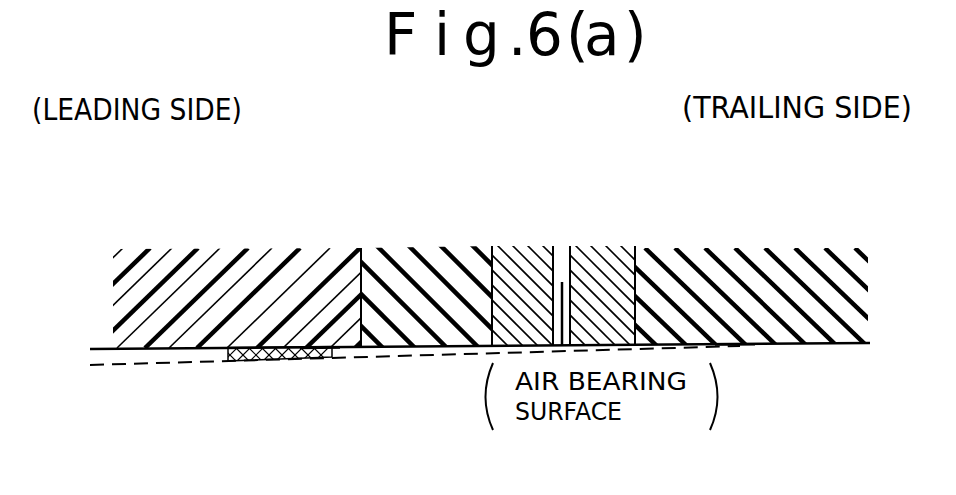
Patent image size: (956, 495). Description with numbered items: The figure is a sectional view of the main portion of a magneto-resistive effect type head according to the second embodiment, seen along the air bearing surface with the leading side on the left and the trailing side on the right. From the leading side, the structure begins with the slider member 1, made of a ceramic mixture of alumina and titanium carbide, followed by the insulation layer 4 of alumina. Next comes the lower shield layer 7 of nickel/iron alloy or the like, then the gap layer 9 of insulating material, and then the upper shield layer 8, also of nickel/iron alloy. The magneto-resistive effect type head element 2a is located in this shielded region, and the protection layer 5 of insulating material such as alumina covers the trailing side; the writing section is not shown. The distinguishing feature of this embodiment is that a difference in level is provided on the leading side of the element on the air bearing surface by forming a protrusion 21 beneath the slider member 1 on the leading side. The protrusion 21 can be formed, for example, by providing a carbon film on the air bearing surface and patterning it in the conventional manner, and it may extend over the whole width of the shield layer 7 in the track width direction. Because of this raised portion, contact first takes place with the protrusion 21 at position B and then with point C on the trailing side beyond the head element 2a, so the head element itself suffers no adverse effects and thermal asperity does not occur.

The slider member 1 is at (233, 250).
The insulation layer 4 is at (401, 250).
The lower shield layer 7 is at (522, 247).
The gap layer 9 is at (567, 250).
The upper shield layer 8 is at (615, 248).
The magneto-resistive effect type head element 2a is at (568, 310).
The protection layer 5 is at (778, 248).
The protrusion 21 is at (340, 365).
The position B is at (318, 370).
The point C is at (735, 362).